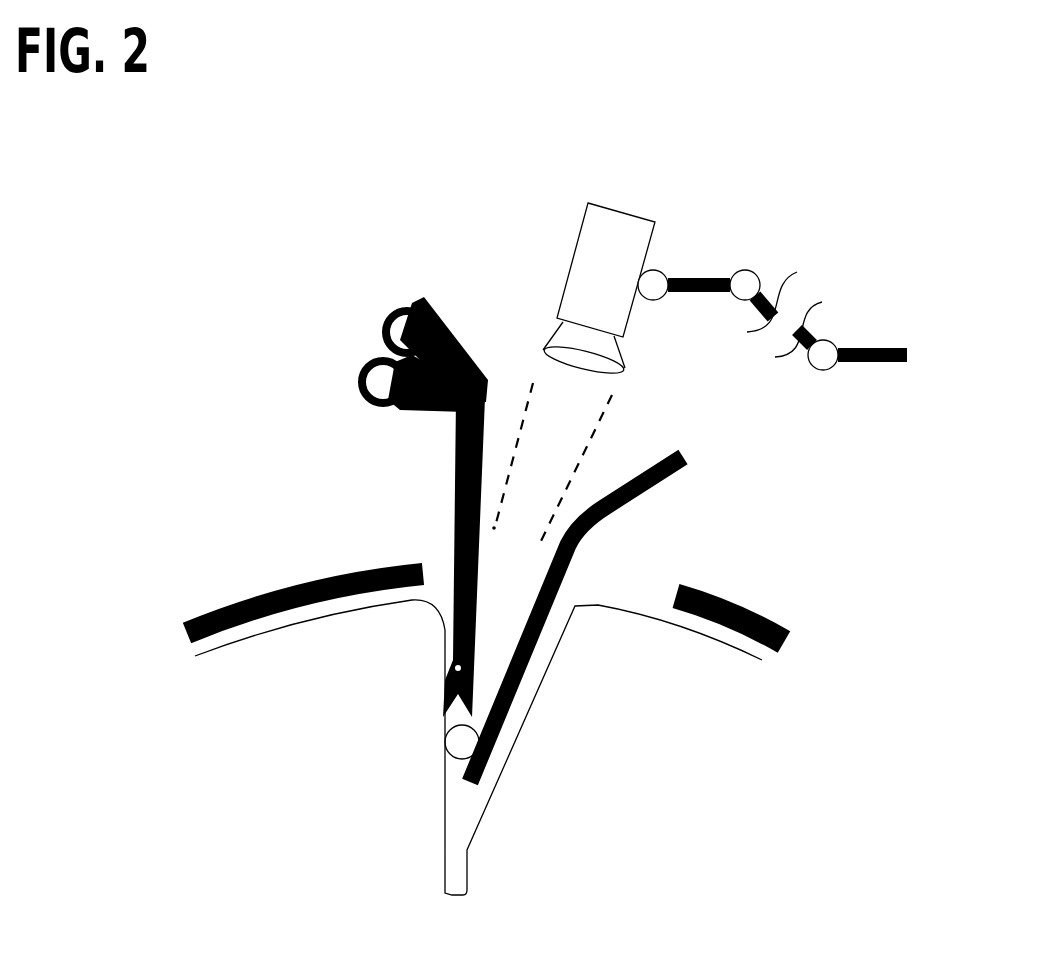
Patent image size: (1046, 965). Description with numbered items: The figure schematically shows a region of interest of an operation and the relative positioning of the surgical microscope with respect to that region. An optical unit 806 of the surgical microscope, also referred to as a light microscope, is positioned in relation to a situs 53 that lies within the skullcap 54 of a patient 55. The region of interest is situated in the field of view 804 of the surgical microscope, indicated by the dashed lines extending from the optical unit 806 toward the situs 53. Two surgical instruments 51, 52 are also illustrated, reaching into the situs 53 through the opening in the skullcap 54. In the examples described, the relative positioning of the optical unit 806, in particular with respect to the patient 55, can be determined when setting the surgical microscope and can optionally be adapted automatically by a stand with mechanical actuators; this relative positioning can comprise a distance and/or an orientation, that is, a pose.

The surgical instrument 51 is at (408, 282).
The surgical instrument 52 is at (689, 440).
The situs 53 is at (445, 742).
The skullcap 54 is at (262, 585).
The patient 55 is at (235, 770).
The field of view 804 is at (528, 385).
The optical unit 806 is at (637, 210).